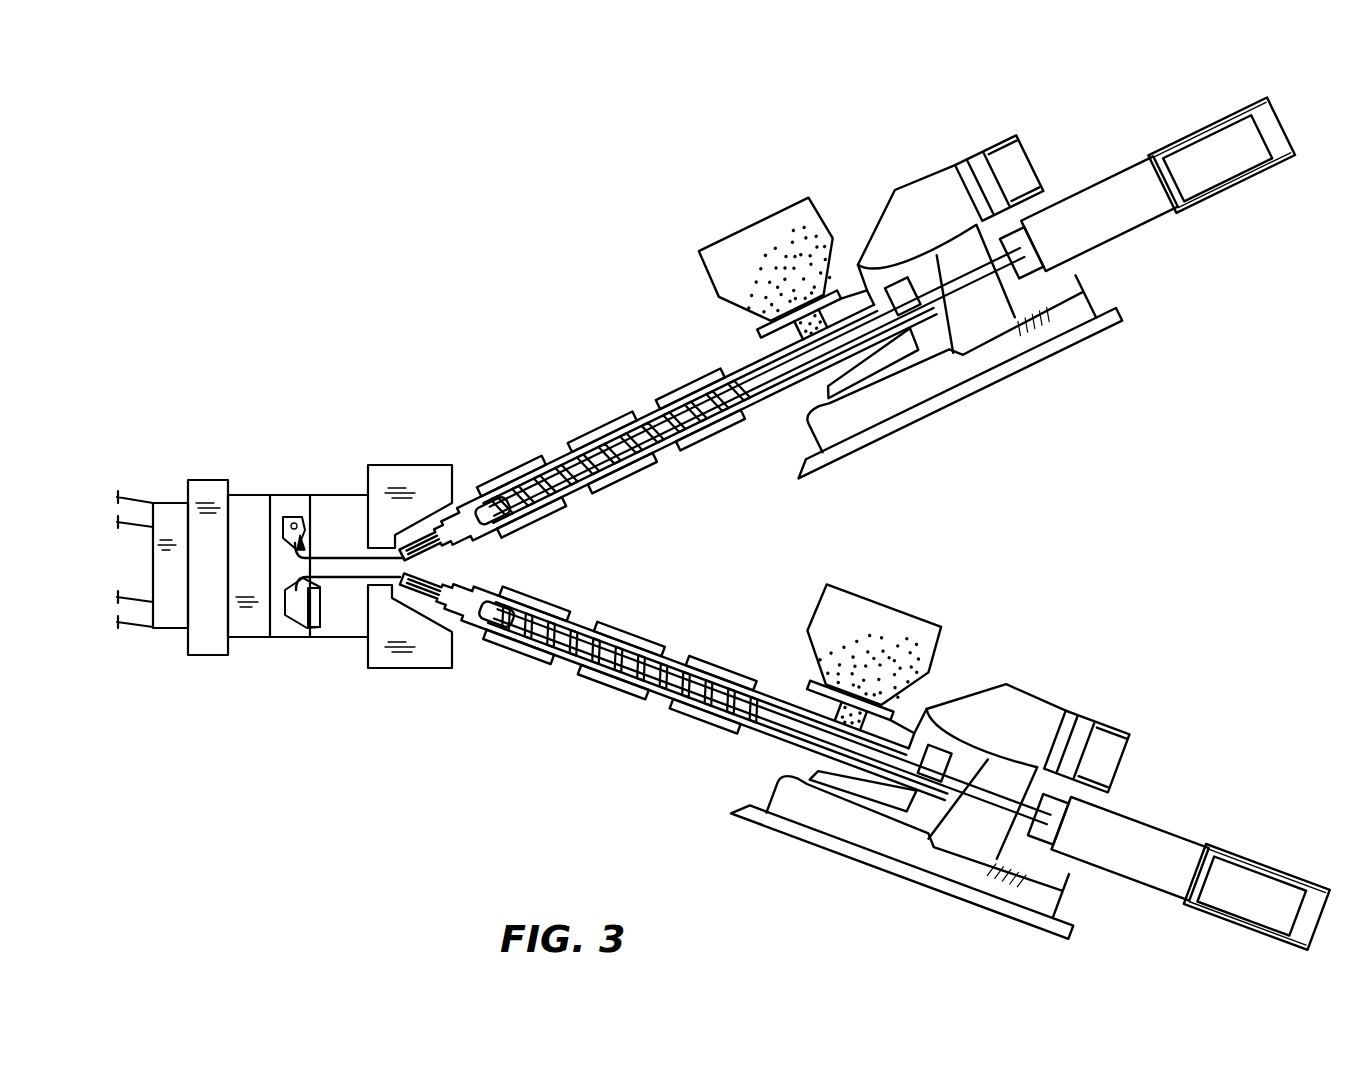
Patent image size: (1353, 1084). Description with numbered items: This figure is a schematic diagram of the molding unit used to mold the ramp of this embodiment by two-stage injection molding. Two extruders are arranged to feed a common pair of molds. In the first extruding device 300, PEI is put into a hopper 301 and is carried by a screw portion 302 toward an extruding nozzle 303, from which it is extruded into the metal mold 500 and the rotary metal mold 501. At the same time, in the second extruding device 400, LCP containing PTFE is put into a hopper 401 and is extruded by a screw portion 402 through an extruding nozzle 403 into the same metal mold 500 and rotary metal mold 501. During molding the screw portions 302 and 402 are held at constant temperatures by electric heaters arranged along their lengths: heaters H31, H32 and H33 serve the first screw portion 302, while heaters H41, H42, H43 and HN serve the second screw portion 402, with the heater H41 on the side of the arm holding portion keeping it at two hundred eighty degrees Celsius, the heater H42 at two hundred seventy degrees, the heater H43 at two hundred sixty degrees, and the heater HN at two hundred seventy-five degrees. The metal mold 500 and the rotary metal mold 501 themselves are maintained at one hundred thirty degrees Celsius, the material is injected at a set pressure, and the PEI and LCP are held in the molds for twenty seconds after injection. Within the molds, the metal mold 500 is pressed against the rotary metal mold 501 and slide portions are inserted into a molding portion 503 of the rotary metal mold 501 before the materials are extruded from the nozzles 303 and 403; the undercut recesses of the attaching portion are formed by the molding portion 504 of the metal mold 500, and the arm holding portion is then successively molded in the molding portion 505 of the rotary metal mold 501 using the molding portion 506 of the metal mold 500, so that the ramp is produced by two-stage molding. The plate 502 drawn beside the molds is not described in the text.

The first extruding device 300 is at (970, 157).
The hopper 301 is at (748, 226).
The screw portion 302 is at (623, 443).
The extruding nozzle 303 is at (345, 547).
The second extruding device 400 is at (1094, 706).
The hopper 401 is at (895, 600).
The screw portion 402 is at (645, 650).
The extruding nozzle 403 is at (347, 570).
The metal mold 500 is at (360, 493).
The rotary metal mold 501 is at (243, 515).
The mounting plate 502 is at (210, 490).
The molding portion 503 is at (288, 520).
The molding portion 504 is at (312, 522).
The molding portion 505 is at (268, 617).
The molding portion 506 is at (307, 627).
The electric heater HN is at (412, 670).
The electric heater H31 is at (542, 532).
The electric heater H32 is at (632, 490).
The electric heater H33 is at (705, 447).
The electric heater H41 is at (520, 660).
The electric heater H42 is at (610, 700).
The electric heater H43 is at (705, 740).